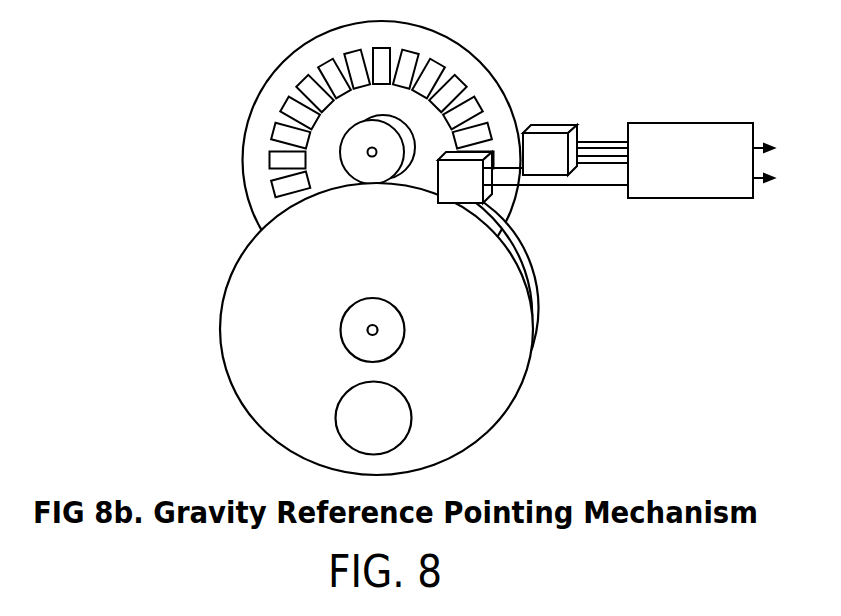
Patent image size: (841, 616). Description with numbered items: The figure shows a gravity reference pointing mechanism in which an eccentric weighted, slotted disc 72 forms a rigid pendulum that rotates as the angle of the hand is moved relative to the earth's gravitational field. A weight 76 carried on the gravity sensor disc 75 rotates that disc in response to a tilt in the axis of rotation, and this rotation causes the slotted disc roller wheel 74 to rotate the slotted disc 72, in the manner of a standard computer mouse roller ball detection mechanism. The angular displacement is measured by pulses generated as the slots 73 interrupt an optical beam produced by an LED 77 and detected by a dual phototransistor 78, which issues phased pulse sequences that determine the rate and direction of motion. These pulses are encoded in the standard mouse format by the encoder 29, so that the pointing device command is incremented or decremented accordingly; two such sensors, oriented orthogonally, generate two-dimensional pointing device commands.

The slotted disc 72 is at (497, 50).
The slots 73 is at (315, 93).
The slotted disc roller wheel 74 is at (348, 157).
The gravity sensor disc 75 is at (278, 297).
The weight 76 is at (337, 443).
The LED 77 is at (495, 195).
The dual phototransistor 78 is at (548, 131).
The encoder 29 is at (701, 143).